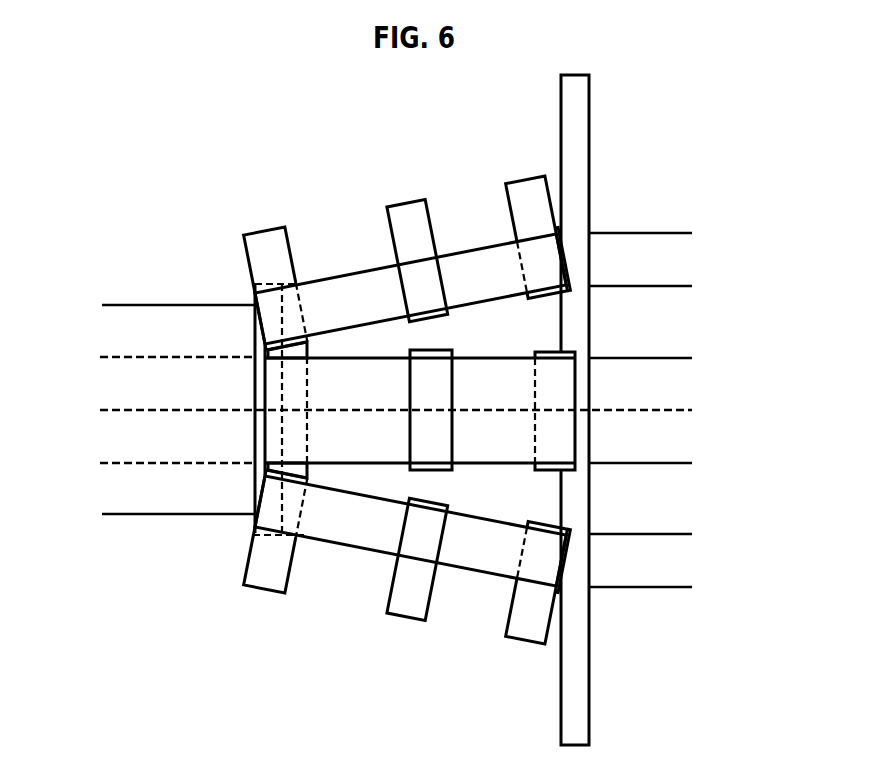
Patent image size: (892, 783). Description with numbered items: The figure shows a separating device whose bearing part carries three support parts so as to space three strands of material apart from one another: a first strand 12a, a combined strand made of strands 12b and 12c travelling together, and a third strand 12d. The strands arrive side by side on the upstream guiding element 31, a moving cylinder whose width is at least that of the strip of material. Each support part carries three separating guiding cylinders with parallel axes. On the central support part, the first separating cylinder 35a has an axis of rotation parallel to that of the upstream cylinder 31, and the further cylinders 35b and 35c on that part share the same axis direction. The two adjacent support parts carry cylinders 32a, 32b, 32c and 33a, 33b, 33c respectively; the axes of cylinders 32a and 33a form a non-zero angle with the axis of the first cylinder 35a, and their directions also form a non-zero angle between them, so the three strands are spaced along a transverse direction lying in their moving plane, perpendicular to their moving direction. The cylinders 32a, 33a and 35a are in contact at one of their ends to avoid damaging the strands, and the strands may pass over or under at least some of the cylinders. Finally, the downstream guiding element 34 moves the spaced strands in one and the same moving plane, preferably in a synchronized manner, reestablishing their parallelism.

The strand of material 12a is at (177, 321).
The strand of material 12b is at (173, 500).
The strand of material 12c is at (92, 357).
The strand of material 12d is at (700, 357).
The upstream guiding element 31 is at (258, 430).
The separating guiding cylinder 32a is at (268, 246).
The separating guiding cylinder 32b is at (410, 222).
The separating guiding cylinder 32c is at (530, 198).
The separating guiding cylinder 33a is at (267, 573).
The separating guiding cylinder 33b is at (408, 600).
The separating guiding cylinder 33c is at (530, 625).
The downstream guiding element 34 is at (577, 655).
The first separating cylinder 35a is at (300, 353).
The separating guiding cylinder 35b is at (432, 357).
The separating guiding cylinder 35c is at (547, 464).